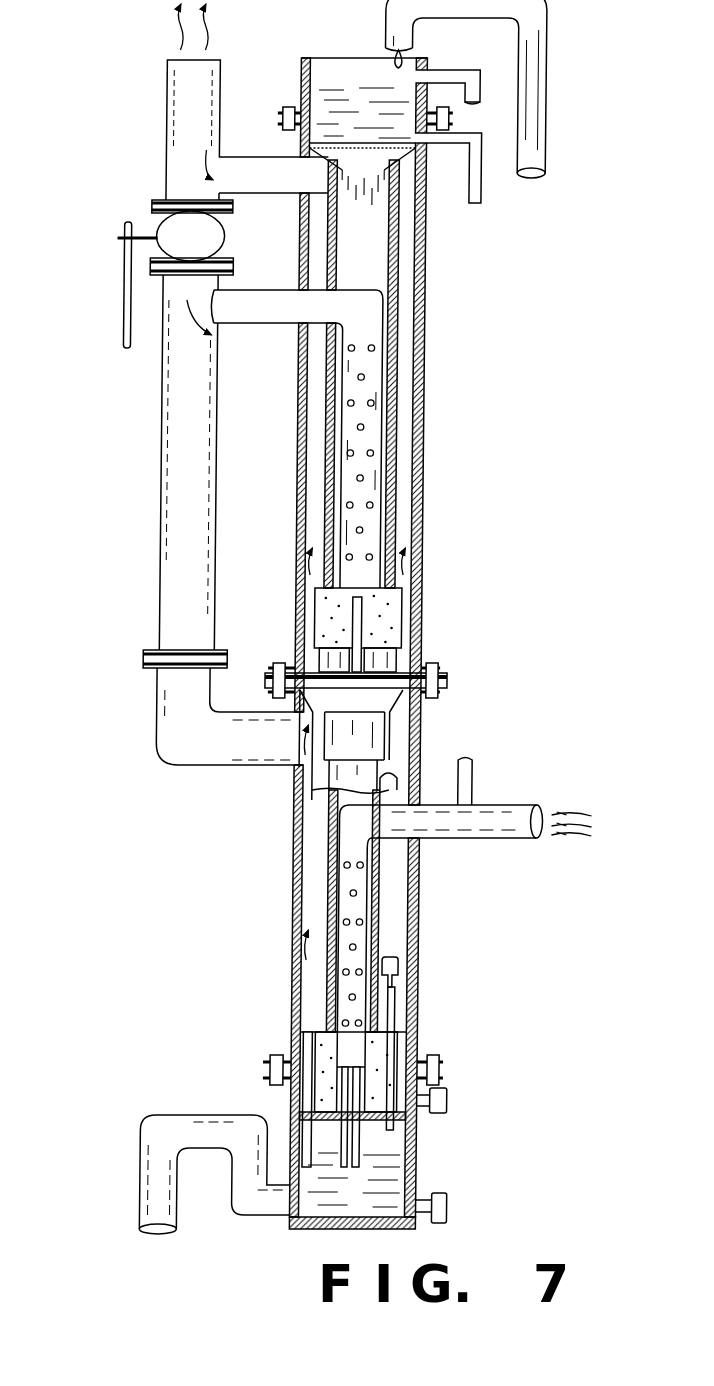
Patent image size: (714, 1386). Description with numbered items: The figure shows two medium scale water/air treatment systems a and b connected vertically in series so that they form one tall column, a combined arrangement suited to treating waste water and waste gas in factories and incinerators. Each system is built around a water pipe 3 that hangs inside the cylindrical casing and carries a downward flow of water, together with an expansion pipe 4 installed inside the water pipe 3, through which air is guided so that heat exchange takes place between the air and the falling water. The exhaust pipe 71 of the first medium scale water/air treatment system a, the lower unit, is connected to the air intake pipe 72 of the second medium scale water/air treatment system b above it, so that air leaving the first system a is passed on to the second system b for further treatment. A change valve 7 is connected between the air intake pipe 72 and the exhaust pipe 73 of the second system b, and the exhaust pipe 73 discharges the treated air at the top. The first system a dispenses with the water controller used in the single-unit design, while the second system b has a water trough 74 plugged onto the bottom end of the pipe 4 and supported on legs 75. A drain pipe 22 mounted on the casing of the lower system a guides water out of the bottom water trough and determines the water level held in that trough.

The water pipe 3 is at (328, 435).
The expansion pipe 4 is at (372, 488).
The change valve 7 is at (175, 232).
The drain pipe 22 is at (207, 1128).
The exhaust pipe 71 is at (182, 728).
The air intake pipe 72 is at (254, 315).
The exhaust pipe 73 is at (181, 100).
The water trough 74 is at (386, 610).
The legs 75 is at (408, 660).
The first medium scale water/air treatment system a is at (192, 938).
The second medium scale water/air treatment system b is at (135, 549).